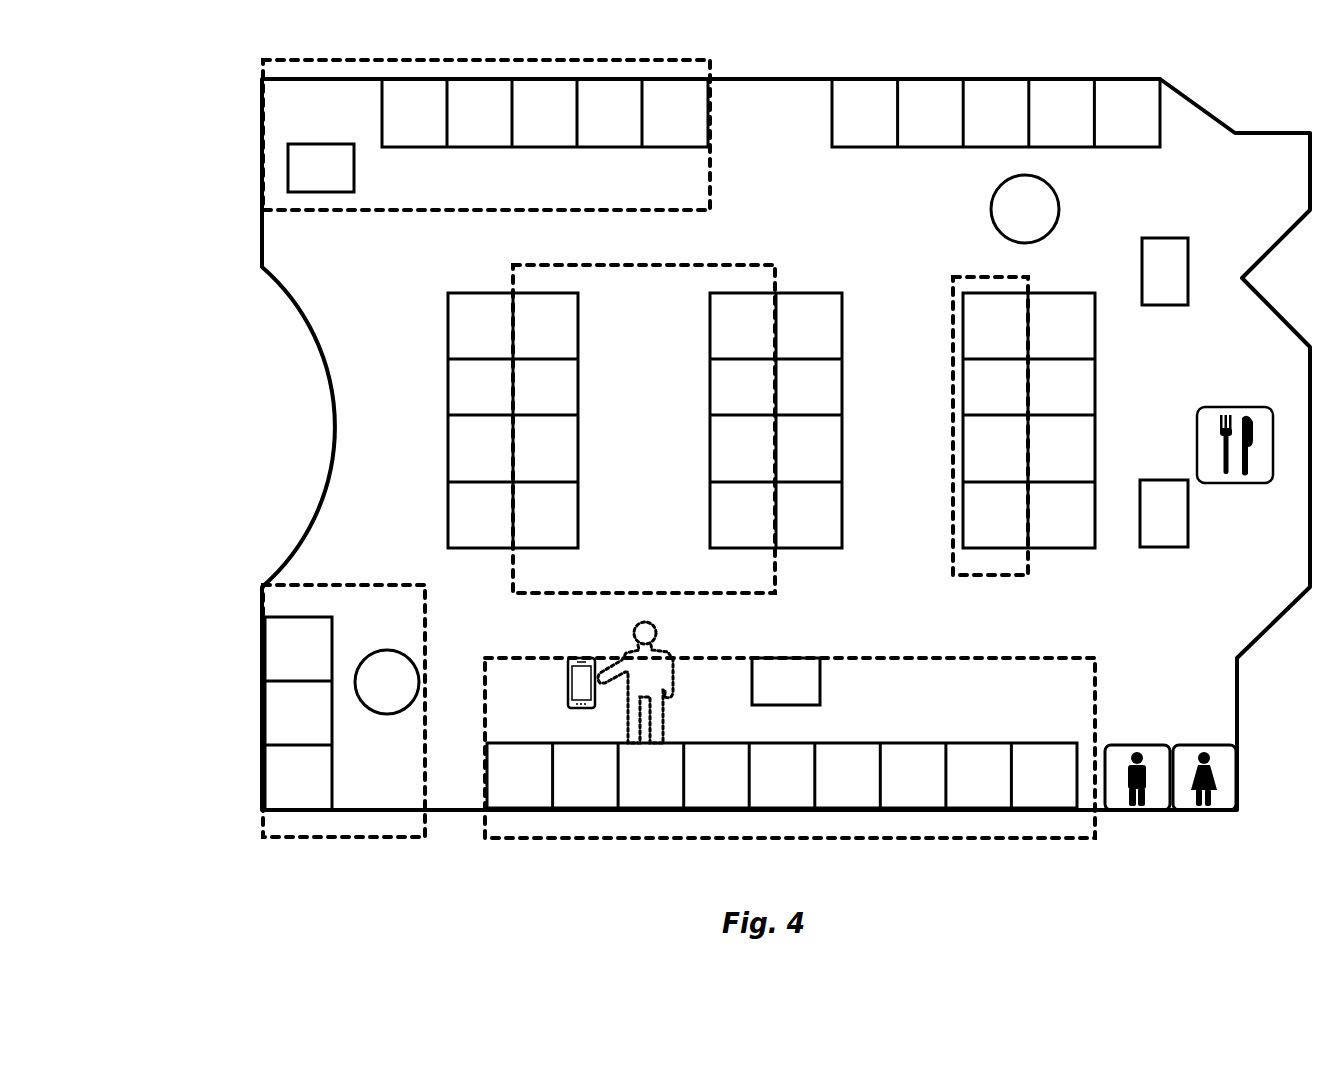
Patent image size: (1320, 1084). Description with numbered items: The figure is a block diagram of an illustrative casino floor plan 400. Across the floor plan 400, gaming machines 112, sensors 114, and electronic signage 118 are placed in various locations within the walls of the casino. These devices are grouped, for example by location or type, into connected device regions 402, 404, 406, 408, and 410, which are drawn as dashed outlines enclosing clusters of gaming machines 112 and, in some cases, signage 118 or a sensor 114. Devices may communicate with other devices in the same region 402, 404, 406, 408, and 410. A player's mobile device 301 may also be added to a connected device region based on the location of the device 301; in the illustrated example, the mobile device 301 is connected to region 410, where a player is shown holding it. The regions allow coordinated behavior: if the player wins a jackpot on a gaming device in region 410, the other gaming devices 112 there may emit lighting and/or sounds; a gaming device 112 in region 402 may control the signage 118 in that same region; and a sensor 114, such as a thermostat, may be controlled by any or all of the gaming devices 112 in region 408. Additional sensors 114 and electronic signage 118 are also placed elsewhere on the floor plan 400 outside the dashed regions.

The gaming machine 112 is at (712, 444).
The sensor 114 is at (707, 444).
The electronic signage 118 is at (738, 424).
The mobile device 301 is at (565, 680).
The casino floor plan 400 is at (179, 131).
The connected device region 402 is at (710, 163).
The connected device region 404 is at (657, 265).
The connected device region 406 is at (953, 278).
The connected device region 408 is at (263, 835).
The connected device region 410 is at (625, 840).